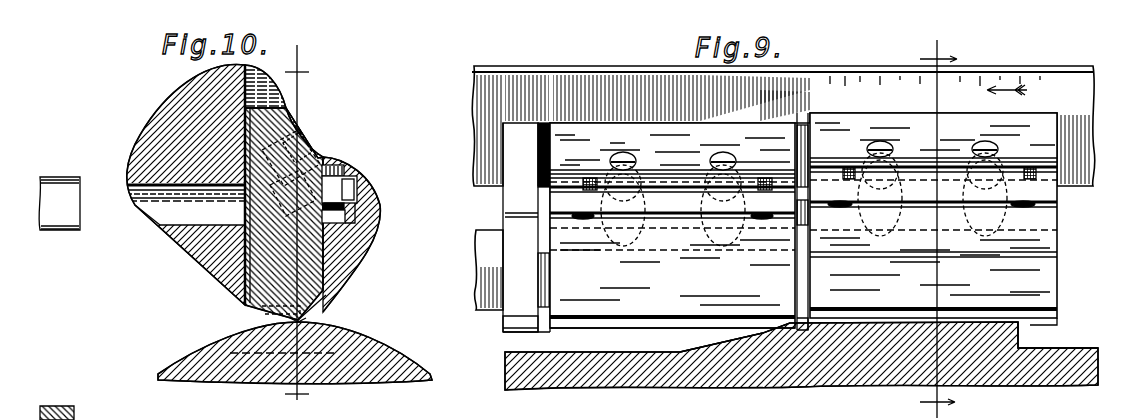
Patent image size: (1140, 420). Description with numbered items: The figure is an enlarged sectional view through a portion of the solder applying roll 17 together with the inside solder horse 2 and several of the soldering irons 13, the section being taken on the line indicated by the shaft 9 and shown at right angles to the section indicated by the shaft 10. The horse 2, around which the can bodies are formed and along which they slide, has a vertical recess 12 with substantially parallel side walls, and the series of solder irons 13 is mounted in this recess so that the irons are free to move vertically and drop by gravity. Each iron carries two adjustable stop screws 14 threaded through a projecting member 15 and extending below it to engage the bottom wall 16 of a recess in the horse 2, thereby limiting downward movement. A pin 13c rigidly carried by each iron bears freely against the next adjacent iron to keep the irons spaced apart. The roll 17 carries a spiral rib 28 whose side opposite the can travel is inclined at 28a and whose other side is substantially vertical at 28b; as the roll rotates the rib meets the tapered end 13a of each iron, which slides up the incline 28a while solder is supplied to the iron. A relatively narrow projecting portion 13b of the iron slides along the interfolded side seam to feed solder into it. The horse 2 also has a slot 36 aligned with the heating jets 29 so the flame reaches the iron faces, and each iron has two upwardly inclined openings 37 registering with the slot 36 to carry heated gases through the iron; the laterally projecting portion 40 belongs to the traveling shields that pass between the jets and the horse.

In FIG. 10, the inside solder horse 2 is at (175, 113).
In FIG. 9, the inside solder horse 2 is at (1035, 72).
In FIG. 10, the shaft 9 is at (308, 226).
In FIG. 9, the shaft 10 is at (938, 229).
In FIG. 10, the vertical recess 12 is at (282, 93).
In FIG. 10, the solder iron 13 is at (267, 130).
In FIG. 9, the solder iron 13 is at (523, 288).
In FIG. 9, the tapered end 13a is at (540, 333).
In FIG. 10, the narrow projecting portion 13b is at (302, 318).
In FIG. 9, the narrow projecting portion 13b is at (650, 327).
In FIG. 9, the pin 13c is at (540, 243).
In FIG. 10, the adjustable stop screw 14 is at (341, 164).
In FIG. 9, the adjustable stop screw 14 is at (590, 220).
In FIG. 10, the projecting member 15 is at (347, 187).
In FIG. 10, the bottom wall 16 is at (352, 215).
In FIG. 10, the solder applying roll 17 is at (403, 360).
In FIG. 9, the solder applying roll 17 is at (1080, 360).
In FIG. 10, the spiral rib 28 is at (368, 335).
In FIG. 9, the spiral rib 28 is at (970, 322).
In FIG. 9, the inclined side 28a is at (753, 337).
In FIG. 9, the vertical side 28b is at (1020, 338).
In FIG. 10, the heating jet 29 is at (52, 188).
In FIG. 10, the slot 36 is at (165, 207).
In FIG. 10, the upwardly inclined opening 37 is at (315, 152).
In FIG. 9, the upwardly inclined opening 37 is at (710, 155).
In FIG. 10, the laterally projecting portion 40 is at (62, 406).